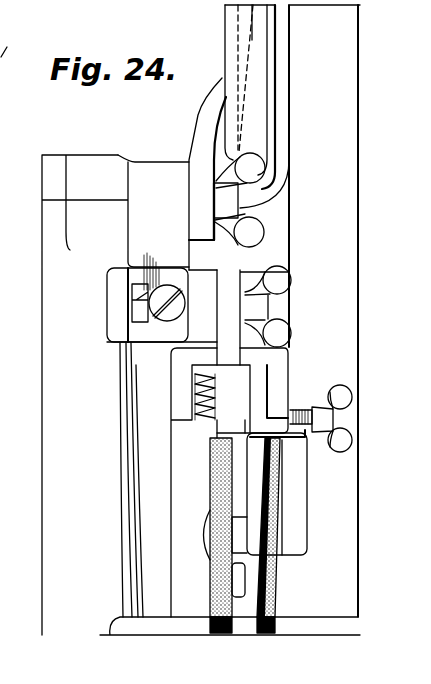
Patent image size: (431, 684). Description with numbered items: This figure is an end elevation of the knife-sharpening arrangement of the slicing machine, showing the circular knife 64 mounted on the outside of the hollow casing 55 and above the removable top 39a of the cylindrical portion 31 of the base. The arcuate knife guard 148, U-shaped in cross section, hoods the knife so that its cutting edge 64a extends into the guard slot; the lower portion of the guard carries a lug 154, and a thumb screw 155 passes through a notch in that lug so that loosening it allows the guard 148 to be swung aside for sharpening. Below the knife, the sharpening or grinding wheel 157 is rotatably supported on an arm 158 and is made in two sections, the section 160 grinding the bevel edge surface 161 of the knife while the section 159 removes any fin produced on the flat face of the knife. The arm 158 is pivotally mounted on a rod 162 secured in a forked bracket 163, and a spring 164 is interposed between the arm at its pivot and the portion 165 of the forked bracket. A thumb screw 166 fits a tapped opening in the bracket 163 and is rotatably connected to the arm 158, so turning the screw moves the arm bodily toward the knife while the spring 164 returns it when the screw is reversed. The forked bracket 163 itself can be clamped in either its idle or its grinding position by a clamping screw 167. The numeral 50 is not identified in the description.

The arcuate knife guard 148 is at (232, 27).
The lug 154 is at (202, 123).
The hollow casing 55 is at (179, 311).
The removable section or top 39a is at (117, 181).
The circular knife 64 is at (252, 38).
The bevel edge surface 161 is at (248, 85).
The cutting edge 64a is at (265, 163).
The thumb screw 155 is at (242, 214).
The clamping screw 167 is at (290, 271).
The forked bracket 163 is at (291, 349).
The rod 162 is at (268, 392).
The thumb screw 166 is at (338, 398).
The frame 50 is at (55, 350).
The cylindrical portion 31 is at (50, 388).
The portion of the forked bracket 165 is at (180, 378).
The spring 164 is at (200, 400).
The arm 158 is at (300, 485).
The grinding wheel section 159 is at (212, 583).
The grinding wheel section 160 is at (276, 590).
The sharpening or grinding wheel 157 is at (222, 634).